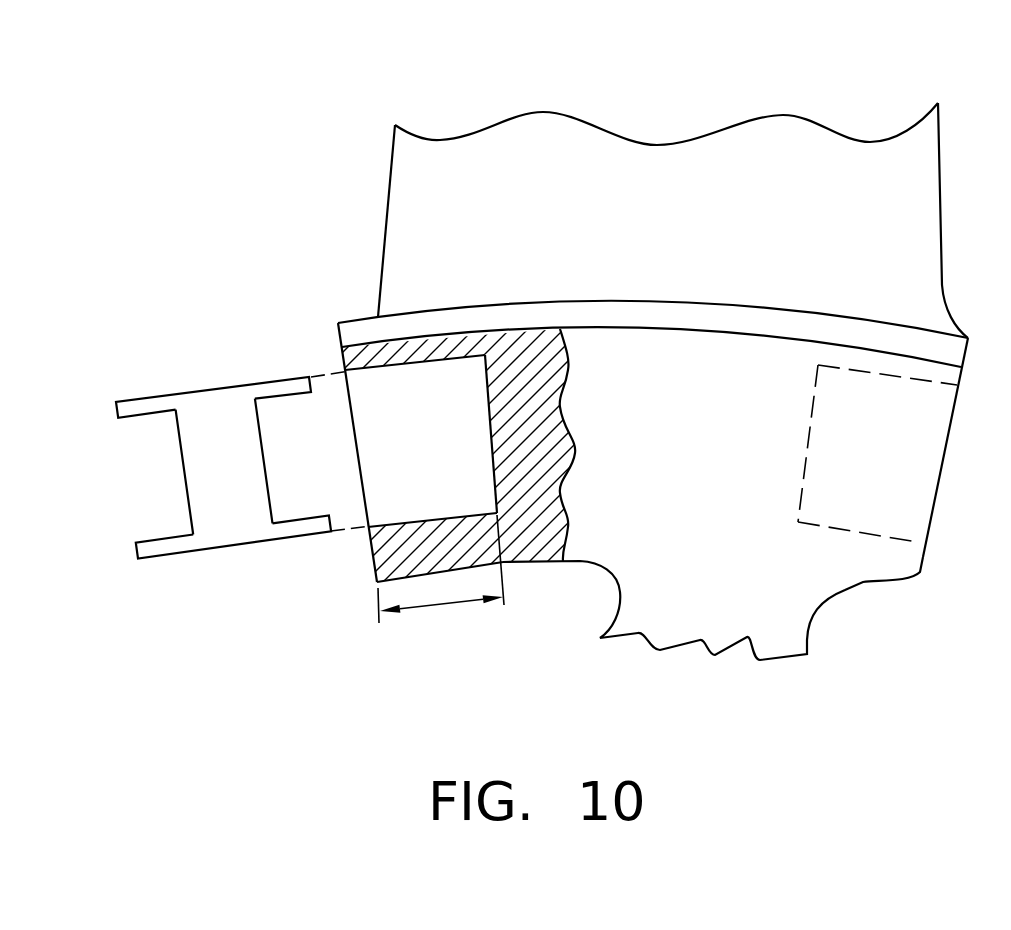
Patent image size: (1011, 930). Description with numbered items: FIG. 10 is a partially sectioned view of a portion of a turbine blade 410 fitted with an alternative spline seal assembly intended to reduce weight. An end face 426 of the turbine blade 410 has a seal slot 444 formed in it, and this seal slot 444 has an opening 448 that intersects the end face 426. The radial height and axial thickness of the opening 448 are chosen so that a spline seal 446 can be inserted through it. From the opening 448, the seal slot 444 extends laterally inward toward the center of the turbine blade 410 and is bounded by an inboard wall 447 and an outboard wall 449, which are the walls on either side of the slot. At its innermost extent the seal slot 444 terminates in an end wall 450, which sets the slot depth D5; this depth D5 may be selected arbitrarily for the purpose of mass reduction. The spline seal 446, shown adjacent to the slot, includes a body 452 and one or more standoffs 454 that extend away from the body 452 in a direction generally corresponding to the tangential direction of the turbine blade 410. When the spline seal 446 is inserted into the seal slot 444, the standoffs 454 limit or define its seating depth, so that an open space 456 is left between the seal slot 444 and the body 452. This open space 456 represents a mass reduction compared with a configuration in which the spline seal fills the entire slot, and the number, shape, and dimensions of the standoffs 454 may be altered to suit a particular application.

The turbine blade 410 is at (706, 65).
The end face 426 is at (341, 340).
The seal slot 444 is at (326, 396).
The spline seal 446 is at (243, 456).
The inboard wall 447 is at (387, 523).
The opening 448 is at (370, 527).
The outboard wall 449 is at (383, 365).
The end wall 450 is at (421, 441).
The body 452 is at (210, 413).
The standoff 454 is at (282, 390).
The open space 456 is at (290, 488).
The depth D5 is at (437, 610).